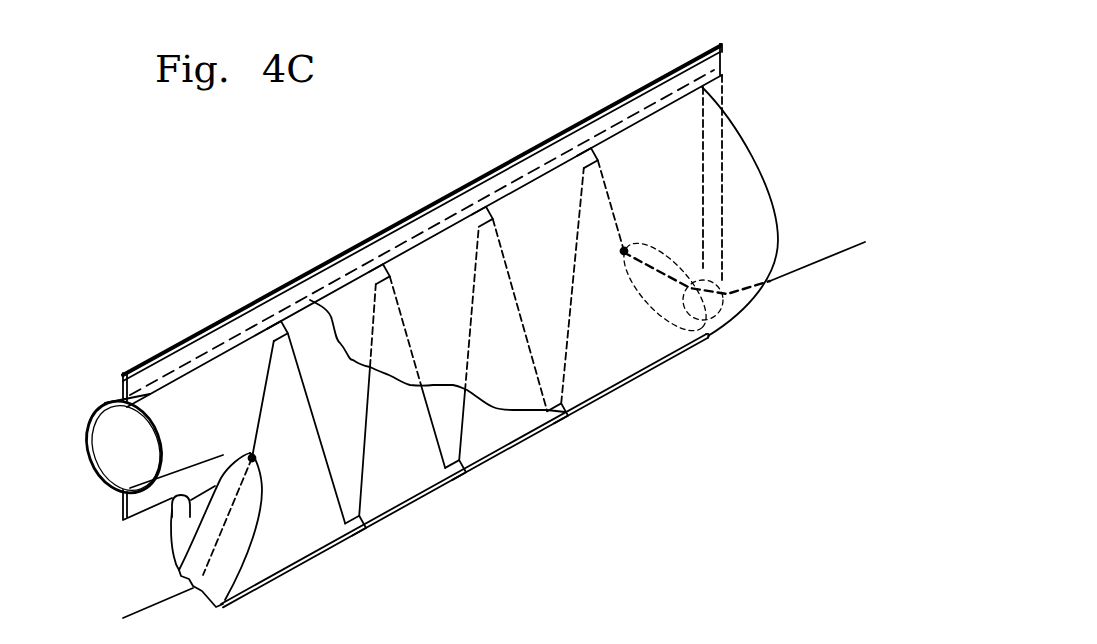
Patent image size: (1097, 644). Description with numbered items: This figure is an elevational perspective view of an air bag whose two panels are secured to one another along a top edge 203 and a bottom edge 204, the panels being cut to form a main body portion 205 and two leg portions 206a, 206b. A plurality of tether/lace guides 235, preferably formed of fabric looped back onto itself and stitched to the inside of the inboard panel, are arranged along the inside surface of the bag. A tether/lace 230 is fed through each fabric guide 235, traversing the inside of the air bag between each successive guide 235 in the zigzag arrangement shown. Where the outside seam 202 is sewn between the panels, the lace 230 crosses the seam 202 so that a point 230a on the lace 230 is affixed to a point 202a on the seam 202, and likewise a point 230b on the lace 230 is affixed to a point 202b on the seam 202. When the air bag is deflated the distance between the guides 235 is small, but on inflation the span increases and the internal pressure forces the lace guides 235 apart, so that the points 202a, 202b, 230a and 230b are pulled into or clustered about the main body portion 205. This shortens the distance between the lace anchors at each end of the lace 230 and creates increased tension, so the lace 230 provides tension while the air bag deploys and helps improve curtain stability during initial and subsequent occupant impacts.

The seam 202 is at (362, 240).
The point on the seam 202a is at (261, 516).
The point on the seam 202b is at (696, 273).
The top edge 203 is at (431, 206).
The bottom edge 204 is at (332, 553).
The main body portion 205 is at (675, 122).
The leg portion 206a is at (237, 541).
The leg portion 206b is at (650, 292).
The tether/lace 230 is at (266, 400).
The point on the lace 230a is at (255, 458).
The point on the lace 230b is at (626, 250).
The tether/lace guide 235 is at (458, 468).